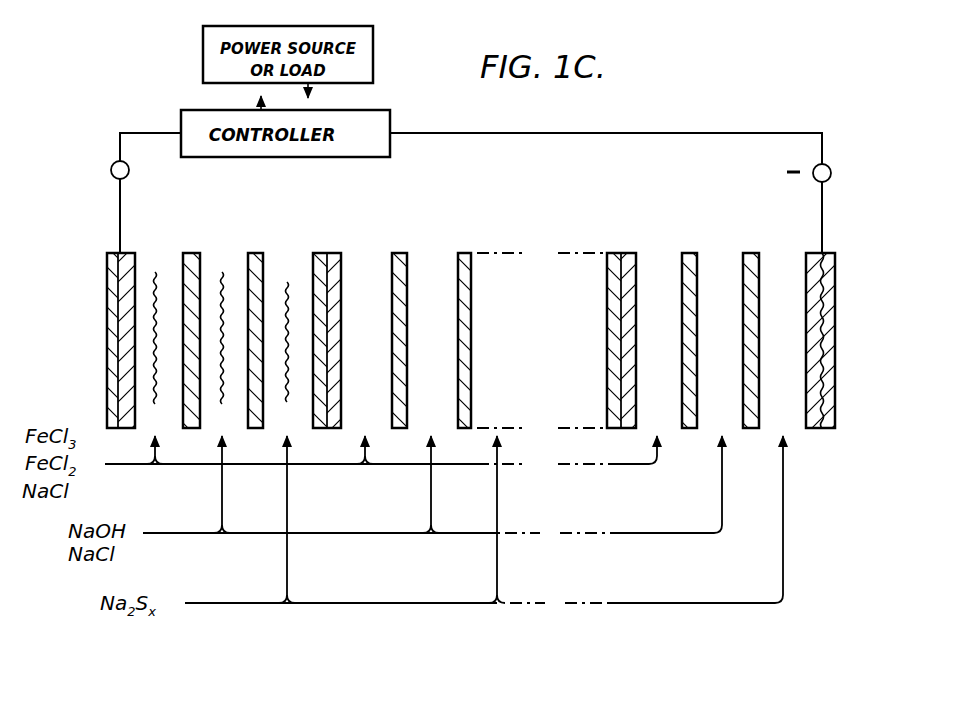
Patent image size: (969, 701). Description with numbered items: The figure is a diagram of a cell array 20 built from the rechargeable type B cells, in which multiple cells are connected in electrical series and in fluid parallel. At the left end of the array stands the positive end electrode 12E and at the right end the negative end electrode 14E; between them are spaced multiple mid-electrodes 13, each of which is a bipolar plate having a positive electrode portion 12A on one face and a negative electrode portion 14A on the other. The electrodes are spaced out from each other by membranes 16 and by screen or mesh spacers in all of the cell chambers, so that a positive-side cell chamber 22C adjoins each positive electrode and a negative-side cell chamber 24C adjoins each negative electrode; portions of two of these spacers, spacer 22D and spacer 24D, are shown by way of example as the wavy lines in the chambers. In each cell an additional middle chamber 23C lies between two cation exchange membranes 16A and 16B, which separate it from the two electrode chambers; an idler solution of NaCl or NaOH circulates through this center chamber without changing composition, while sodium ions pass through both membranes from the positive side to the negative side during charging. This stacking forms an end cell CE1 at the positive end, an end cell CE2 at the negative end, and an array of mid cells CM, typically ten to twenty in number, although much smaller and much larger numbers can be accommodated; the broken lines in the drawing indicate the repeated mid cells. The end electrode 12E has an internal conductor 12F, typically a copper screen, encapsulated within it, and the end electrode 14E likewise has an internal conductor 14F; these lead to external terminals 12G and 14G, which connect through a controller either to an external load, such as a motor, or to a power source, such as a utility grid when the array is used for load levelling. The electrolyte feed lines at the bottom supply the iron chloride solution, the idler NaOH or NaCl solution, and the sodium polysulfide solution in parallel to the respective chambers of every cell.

The external terminal 12G is at (111, 170).
The external terminal 14G is at (831, 172).
The end electrode 12E is at (107, 268).
The internal conductor 12F is at (120, 298).
The cell chamber 22C is at (138, 316).
The screen or mesh spacer 22D is at (160, 393).
The middle chamber 23C is at (202, 364).
The end cell CE1 is at (140, 355).
The end cell CE2 is at (775, 323).
The mid cell CM is at (433, 349).
The cation exchange membrane 16A is at (183, 262).
The cation exchange membrane 16B is at (260, 252).
The membrane 16 is at (245, 247).
The mid-electrode 13 is at (326, 249).
The negative electrode portion 14A is at (313, 272).
The positive electrode portion 12A is at (353, 247).
The cell chamber 24C is at (303, 328).
The screen or mesh spacer 24D is at (302, 402).
The cell array 20 is at (477, 208).
The end electrode 14E is at (833, 255).
The internal conductor 14F is at (815, 385).